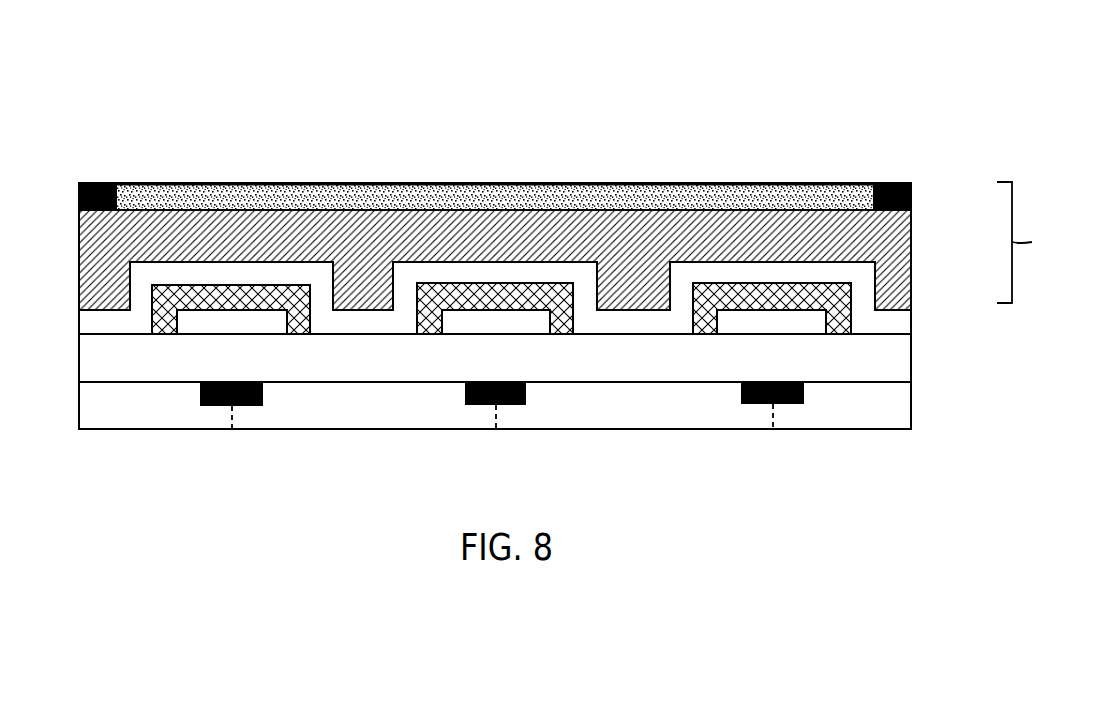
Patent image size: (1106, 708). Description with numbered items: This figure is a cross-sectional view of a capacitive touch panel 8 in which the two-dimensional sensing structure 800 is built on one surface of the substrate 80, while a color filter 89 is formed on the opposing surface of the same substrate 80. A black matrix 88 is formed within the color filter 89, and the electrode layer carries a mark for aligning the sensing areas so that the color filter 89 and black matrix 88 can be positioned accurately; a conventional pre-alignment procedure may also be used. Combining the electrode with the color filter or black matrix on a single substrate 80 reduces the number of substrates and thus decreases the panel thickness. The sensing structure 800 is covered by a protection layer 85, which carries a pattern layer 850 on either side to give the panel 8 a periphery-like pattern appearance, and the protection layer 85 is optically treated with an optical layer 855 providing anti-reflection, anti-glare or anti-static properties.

The capacitive touch panel 8 is at (498, 105).
The two-dimensional sensing structure 800 is at (1044, 242).
The pattern layer 850 is at (100, 182).
The optical layer 855 is at (565, 193).
The protection layer 85 is at (885, 271).
The substrate 80 is at (887, 365).
The color filter 89 is at (887, 411).
The black matrix 88 is at (778, 405).